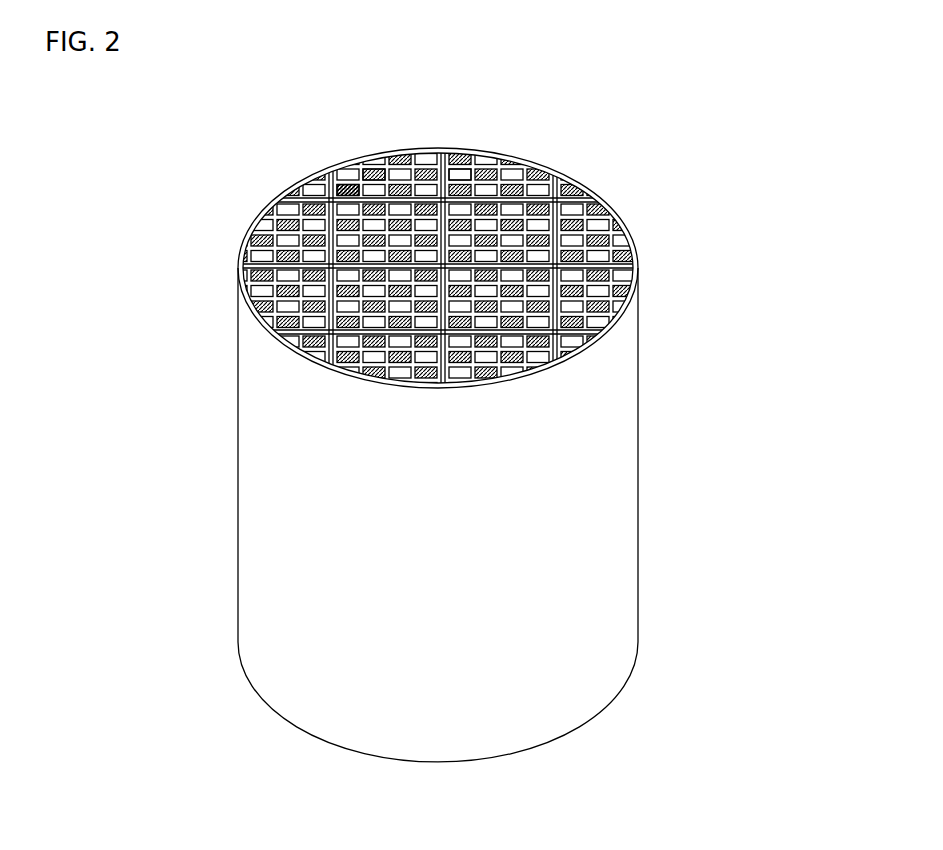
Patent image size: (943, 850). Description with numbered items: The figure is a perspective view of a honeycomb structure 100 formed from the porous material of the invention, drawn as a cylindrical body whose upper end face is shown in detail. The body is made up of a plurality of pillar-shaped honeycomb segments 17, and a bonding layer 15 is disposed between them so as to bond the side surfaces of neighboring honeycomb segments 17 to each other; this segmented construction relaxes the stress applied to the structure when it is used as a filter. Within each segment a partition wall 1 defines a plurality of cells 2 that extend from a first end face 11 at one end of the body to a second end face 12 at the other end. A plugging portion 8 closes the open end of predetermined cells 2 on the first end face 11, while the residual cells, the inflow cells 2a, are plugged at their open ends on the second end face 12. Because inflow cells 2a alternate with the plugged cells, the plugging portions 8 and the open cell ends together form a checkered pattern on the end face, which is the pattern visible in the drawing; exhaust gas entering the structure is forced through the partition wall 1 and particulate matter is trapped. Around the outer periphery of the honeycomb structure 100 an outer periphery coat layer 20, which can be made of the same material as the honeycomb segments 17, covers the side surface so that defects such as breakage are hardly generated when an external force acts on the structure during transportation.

The honeycomb structure 100 is at (737, 116).
The partition wall 1 is at (380, 177).
The cell 2 is at (492, 138).
The inflow cell 2a is at (458, 177).
The plugging portion 8 is at (343, 190).
The first end face 11 is at (527, 158).
The second end face 12 is at (527, 750).
The bonding layer 15 is at (587, 337).
The honeycomb segment 17 is at (286, 232).
The outer periphery coat layer 20 is at (613, 505).